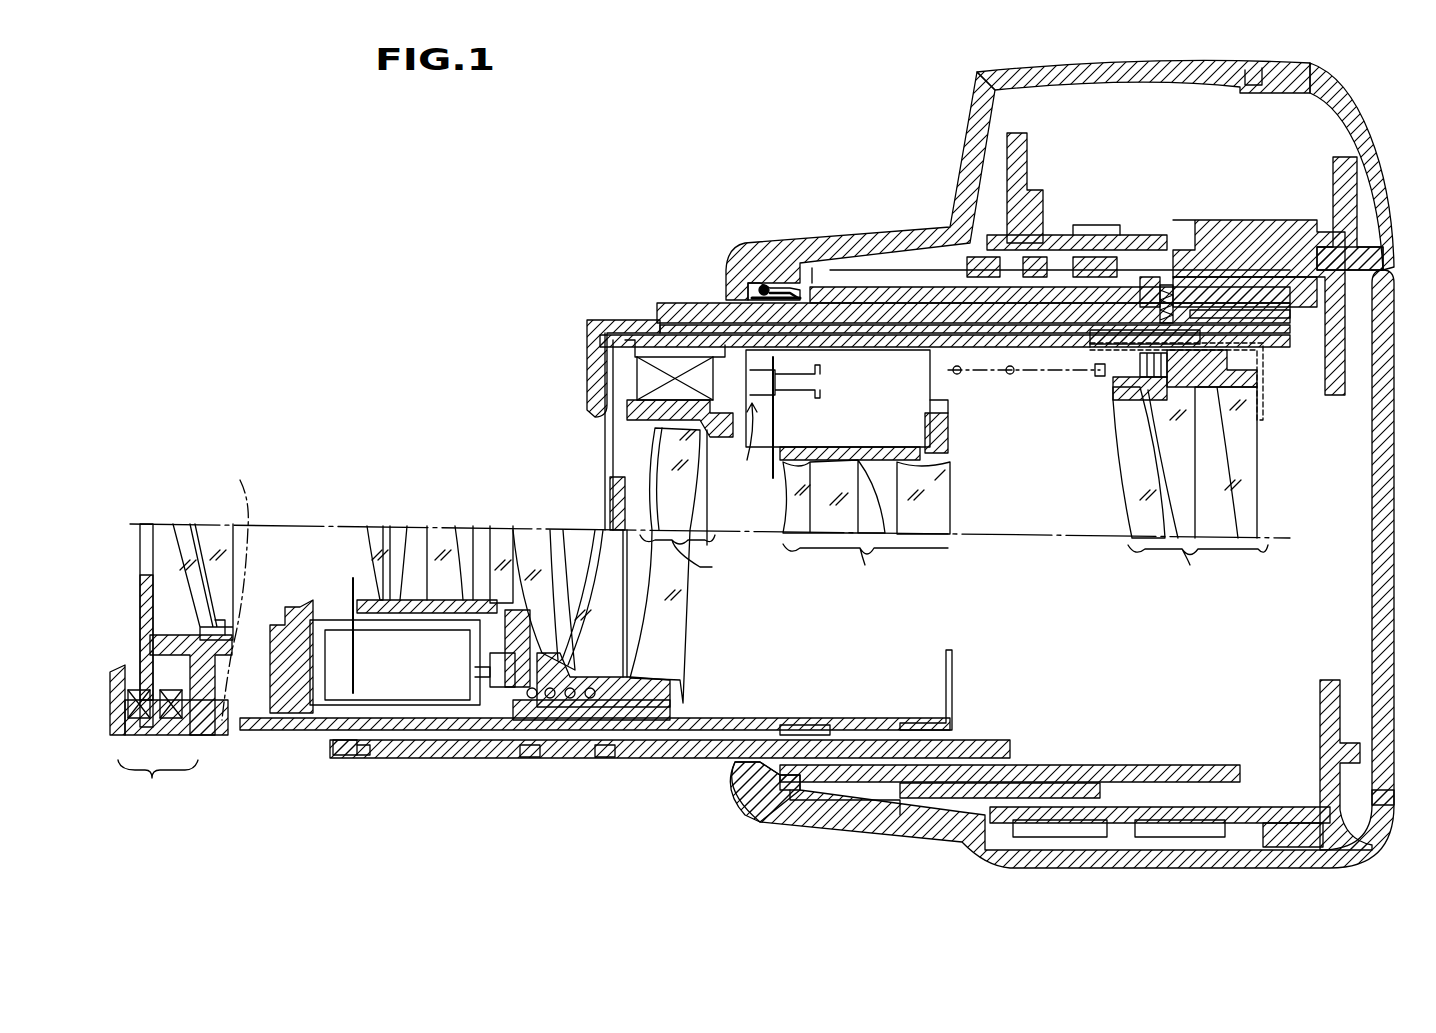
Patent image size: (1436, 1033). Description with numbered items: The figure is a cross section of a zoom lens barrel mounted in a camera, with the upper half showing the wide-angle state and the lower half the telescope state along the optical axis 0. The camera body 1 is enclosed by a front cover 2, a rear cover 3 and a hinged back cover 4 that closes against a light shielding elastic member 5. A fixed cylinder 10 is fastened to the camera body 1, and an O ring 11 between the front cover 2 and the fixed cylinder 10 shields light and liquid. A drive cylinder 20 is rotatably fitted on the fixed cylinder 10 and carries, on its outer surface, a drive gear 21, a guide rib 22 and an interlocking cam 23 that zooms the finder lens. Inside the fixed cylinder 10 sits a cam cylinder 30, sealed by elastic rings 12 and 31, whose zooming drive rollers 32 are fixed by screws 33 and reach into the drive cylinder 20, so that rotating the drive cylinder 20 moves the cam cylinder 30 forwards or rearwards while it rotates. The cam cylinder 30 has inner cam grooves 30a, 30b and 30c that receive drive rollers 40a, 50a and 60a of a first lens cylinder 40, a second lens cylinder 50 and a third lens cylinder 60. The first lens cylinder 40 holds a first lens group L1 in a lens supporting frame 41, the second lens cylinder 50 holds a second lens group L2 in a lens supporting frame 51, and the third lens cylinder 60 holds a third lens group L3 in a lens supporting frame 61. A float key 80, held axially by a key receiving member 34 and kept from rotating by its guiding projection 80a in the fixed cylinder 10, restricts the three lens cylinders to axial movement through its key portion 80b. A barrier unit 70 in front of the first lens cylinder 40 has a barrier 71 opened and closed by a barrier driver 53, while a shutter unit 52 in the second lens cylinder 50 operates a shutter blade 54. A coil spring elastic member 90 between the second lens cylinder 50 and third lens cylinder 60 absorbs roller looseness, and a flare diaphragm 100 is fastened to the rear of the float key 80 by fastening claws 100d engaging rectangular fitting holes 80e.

The optical axis 0 is at (233, 586).
The camera body 1 is at (1290, 245).
The front cover 2 is at (1028, 80).
The rear cover 3 is at (1268, 84).
The back cover 4 is at (1394, 608).
The light shielding elastic member 5 is at (1368, 840).
The fixed cylinder 10 is at (752, 290).
The O ring 11 is at (767, 287).
The elastic ring 12 is at (805, 790).
The drive cylinder 20 is at (835, 287).
The drive gear 21 is at (980, 257).
The guide rib 22 is at (1038, 243).
The interlocking cam 23 is at (1090, 235).
The cam cylinder 30 is at (688, 303).
The cam grooves 30a is at (405, 760).
The cam grooves 30b is at (555, 760).
The cam grooves 30c is at (660, 760).
The elastic ring 31 is at (345, 760).
The zooming drive rollers 32 is at (1150, 277).
The screws 33 is at (1180, 277).
The key receiving member 34 is at (1280, 277).
The first lens cylinder 40 is at (600, 320).
The drive rollers 40a is at (330, 720).
The lens supporting frame 41 is at (650, 420).
The second lens cylinder 50 is at (968, 374).
The drive rollers 50a is at (530, 720).
The lens supporting frame 51 is at (852, 447).
The shutter unit 52 is at (403, 650).
The barrier driver 53 is at (748, 428).
The shutter blade 54 is at (345, 575).
The third lens cylinder 60 is at (1140, 360).
The drive rollers 60a is at (605, 757).
The lens supporting frame 61 is at (1140, 418).
The barrier unit 70 is at (171, 663).
The barrier 71 is at (605, 510).
The float key 80 is at (1225, 340).
The guiding projection 80a is at (1238, 310).
The key portion 80b is at (838, 398).
The rectangular fitting holes 80e is at (1165, 285).
The elastic member 90 is at (1013, 375).
The flare diaphragm 100 is at (1266, 380).
The fastening claws 100d is at (800, 732).
The first lens group L1 is at (685, 565).
The second lens group L2 is at (866, 527).
The third lens group L3 is at (1190, 495).